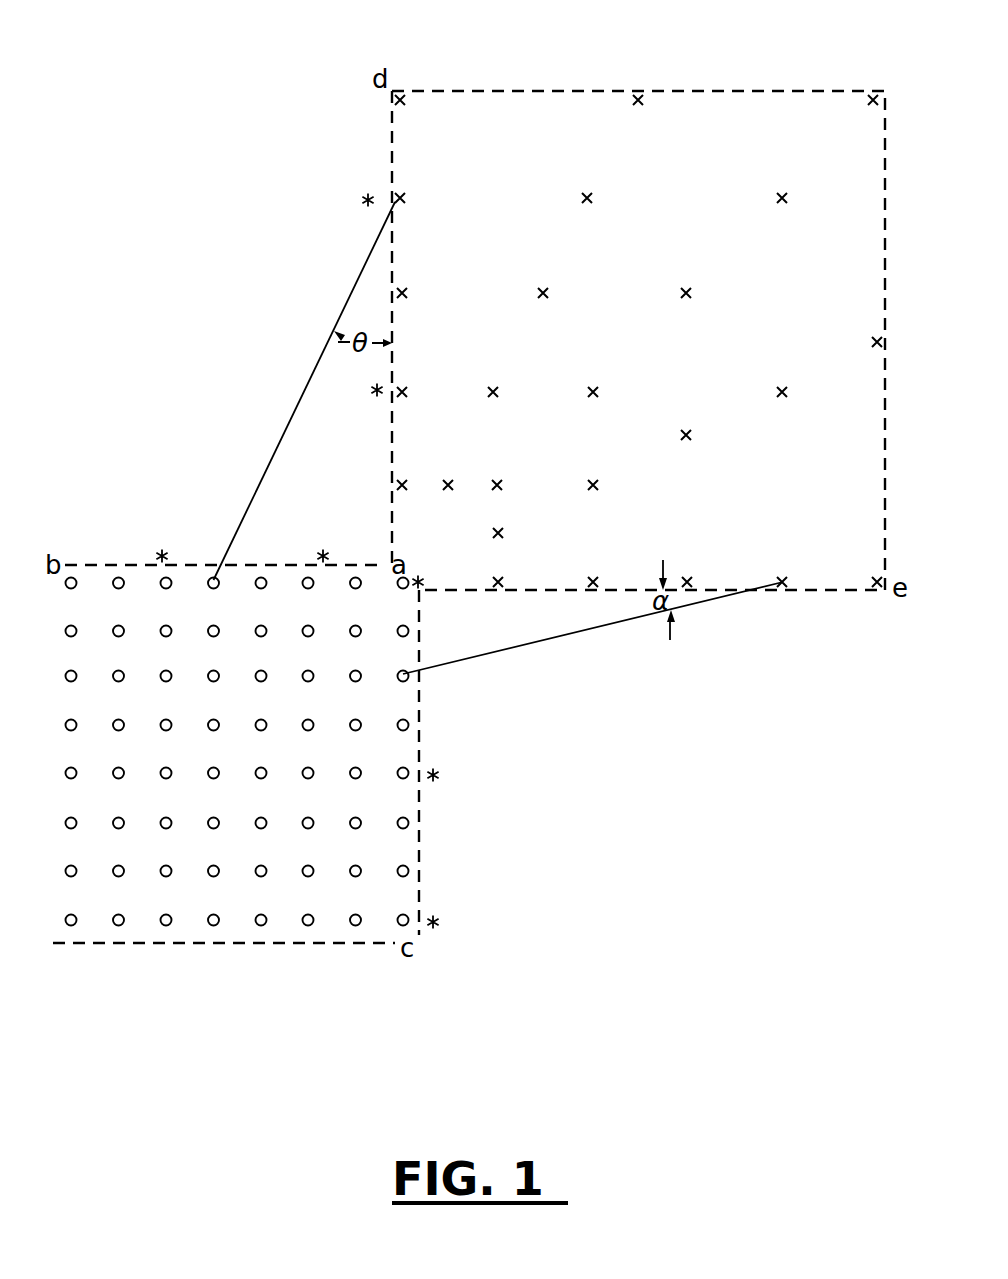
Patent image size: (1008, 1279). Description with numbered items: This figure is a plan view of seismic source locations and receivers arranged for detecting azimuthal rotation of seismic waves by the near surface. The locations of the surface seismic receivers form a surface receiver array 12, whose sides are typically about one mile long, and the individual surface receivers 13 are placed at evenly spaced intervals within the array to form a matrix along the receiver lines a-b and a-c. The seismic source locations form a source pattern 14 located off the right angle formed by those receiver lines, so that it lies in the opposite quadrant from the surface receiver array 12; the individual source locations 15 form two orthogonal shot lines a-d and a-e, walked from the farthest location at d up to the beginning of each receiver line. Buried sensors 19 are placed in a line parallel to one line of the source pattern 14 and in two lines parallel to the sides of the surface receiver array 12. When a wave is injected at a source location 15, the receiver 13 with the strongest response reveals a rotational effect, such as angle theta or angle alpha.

The surface receiver array 12 is at (338, 947).
The surface receivers 13 is at (215, 925).
The source pattern 14 is at (605, 91).
The source locations 15 is at (782, 588).
The buried sensors 19 is at (455, 924).